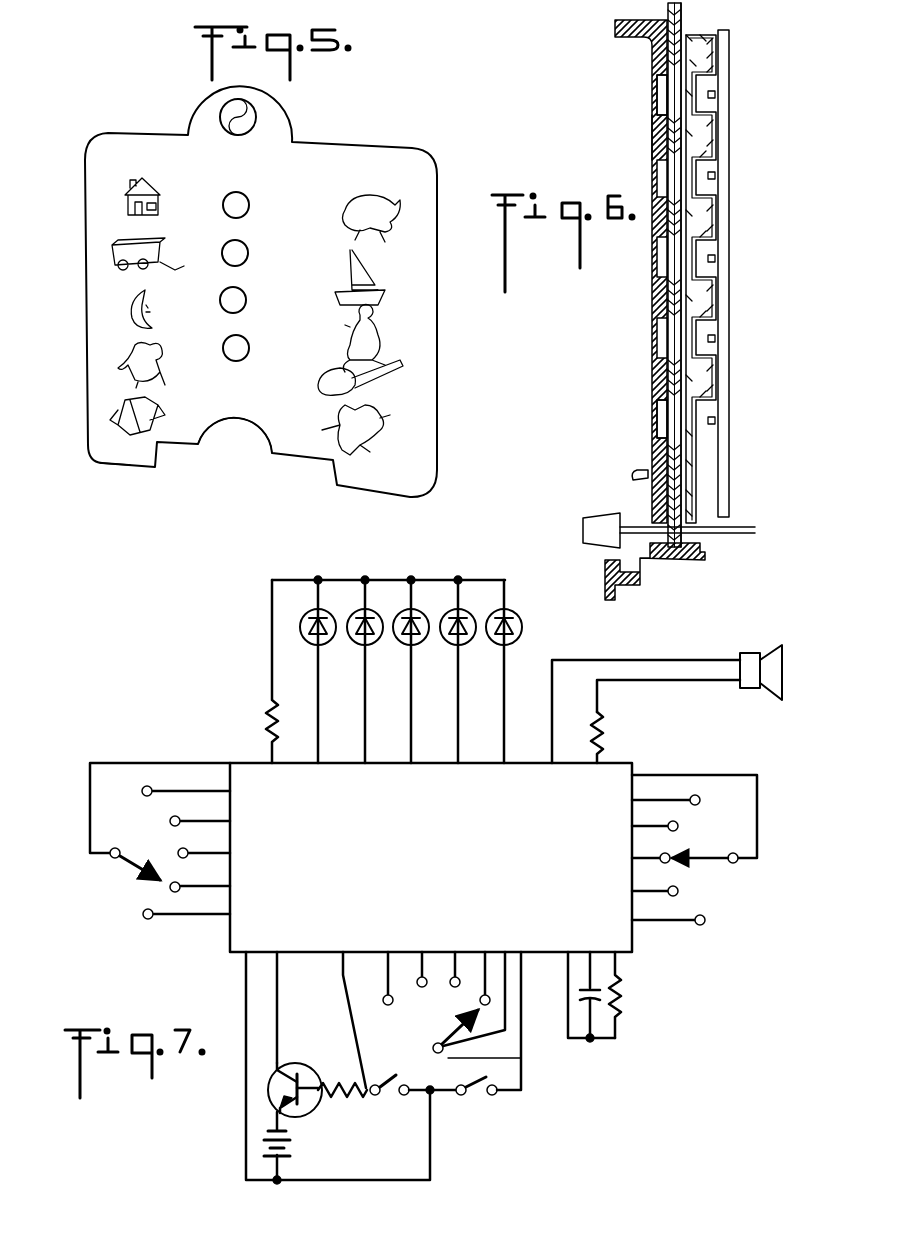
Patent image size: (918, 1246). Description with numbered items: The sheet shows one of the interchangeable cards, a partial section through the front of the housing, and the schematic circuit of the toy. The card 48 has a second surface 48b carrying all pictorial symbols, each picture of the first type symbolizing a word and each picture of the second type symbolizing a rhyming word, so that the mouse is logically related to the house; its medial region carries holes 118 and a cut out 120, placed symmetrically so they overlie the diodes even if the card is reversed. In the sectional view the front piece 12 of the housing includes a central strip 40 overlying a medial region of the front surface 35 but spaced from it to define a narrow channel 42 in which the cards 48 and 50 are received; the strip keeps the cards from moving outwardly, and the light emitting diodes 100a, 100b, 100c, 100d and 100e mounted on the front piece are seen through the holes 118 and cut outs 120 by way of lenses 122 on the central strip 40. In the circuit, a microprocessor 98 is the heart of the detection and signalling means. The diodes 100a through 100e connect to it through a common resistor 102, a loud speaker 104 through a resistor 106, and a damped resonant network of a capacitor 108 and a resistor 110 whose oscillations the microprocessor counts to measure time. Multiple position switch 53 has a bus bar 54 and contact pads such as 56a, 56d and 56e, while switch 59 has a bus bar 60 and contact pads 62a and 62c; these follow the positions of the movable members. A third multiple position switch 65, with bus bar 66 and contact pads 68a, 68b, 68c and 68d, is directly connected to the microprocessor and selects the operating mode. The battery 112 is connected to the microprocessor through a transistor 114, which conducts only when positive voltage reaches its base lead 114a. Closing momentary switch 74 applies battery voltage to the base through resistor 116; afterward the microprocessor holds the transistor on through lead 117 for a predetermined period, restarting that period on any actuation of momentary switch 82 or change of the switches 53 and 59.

In FIG. 6, the front piece 12 is at (735, 232).
In FIG. 6, the front surface 35 is at (660, 493).
In FIG. 6, the central strip 40 is at (652, 299).
In FIG. 6, the channel 42 is at (703, 32).
In FIG. 5, the card 48 is at (205, 100).
In FIG. 6, the card 48 is at (665, 9).
In FIG. 5, the second surface of card 48b is at (125, 457).
In FIG. 6, the card 50 is at (695, 12).
In FIG. 7, the multiple position switch 53 is at (100, 866).
In FIG. 7, the bus bar 54 is at (118, 848).
In FIG. 7, the contact pad 56a is at (151, 786).
In FIG. 7, the contact pad 56d is at (173, 892).
In FIG. 7, the contact pad 56e is at (143, 918).
In FIG. 7, the multiple position switch 59 is at (782, 835).
In FIG. 7, the bus bar 60 is at (735, 863).
In FIG. 7, the contact pad 62a is at (699, 803).
In FIG. 7, the contact pad 62c is at (672, 853).
In FIG. 7, the multiple position switch 65 is at (450, 1058).
In FIG. 7, the bus bar 66 is at (432, 1048).
In FIG. 7, the contact pad 68a is at (492, 1000).
In FIG. 7, the contact pad 68b is at (450, 986).
In FIG. 7, the contact pad 68c is at (415, 990).
In FIG. 7, the contact pad 68d is at (382, 1000).
In FIG. 7, the momentary switch 74 is at (392, 1098).
In FIG. 7, the momentary switch 82 is at (472, 1100).
In FIG. 7, the microprocessor 98 is at (628, 936).
In FIG. 6, the light emitting diode 100a is at (716, 95).
In FIG. 7, the light emitting diode 100a is at (310, 610).
In FIG. 6, the light emitting diode 100b is at (716, 176).
In FIG. 7, the light emitting diode 100b is at (357, 610).
In FIG. 6, the light emitting diode 100c is at (716, 258).
In FIG. 7, the light emitting diode 100c is at (402, 610).
In FIG. 6, the light emitting diode 100d is at (716, 339).
In FIG. 7, the light emitting diode 100d is at (447, 610).
In FIG. 6, the light emitting diode 100e is at (716, 421).
In FIG. 7, the light emitting diode 100e is at (495, 610).
In FIG. 7, the common resistor 102 is at (262, 705).
In FIG. 7, the loud speaker 104 is at (786, 686).
In FIG. 7, the resistor 106 is at (608, 728).
In FIG. 7, the capacitor 108 is at (595, 1008).
In FIG. 7, the resistor 110 is at (624, 1006).
In FIG. 7, the battery 112 is at (285, 1156).
In FIG. 7, the transistor 114 is at (270, 1095).
In FIG. 7, the base lead 114a is at (299, 1072).
In FIG. 7, the resistor 116 is at (338, 1097).
In FIG. 7, the lead 117 is at (343, 975).
In FIG. 5, the holes 118 is at (250, 205).
In FIG. 6, the holes 118 is at (660, 96).
In FIG. 5, the cut outs 120 is at (244, 432).
In FIG. 6, the cut outs 120 is at (658, 417).
In FIG. 6, the lenses 122 is at (652, 112).